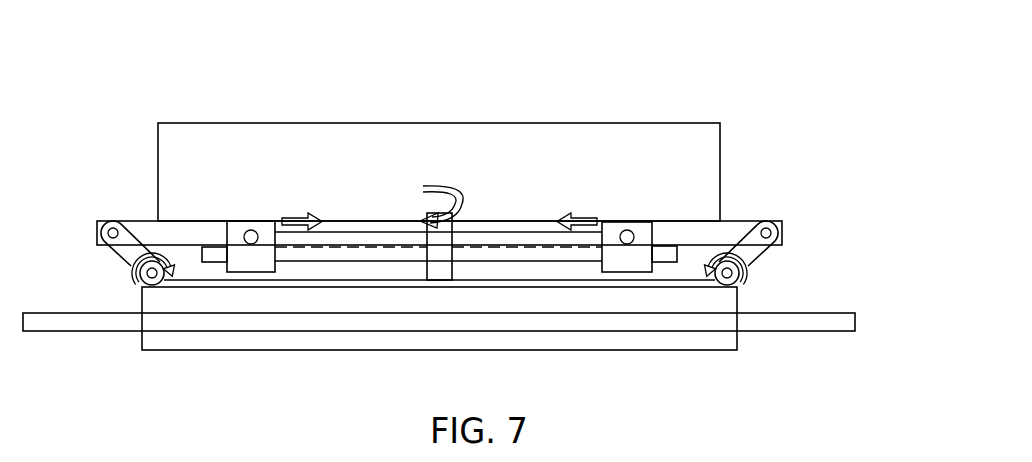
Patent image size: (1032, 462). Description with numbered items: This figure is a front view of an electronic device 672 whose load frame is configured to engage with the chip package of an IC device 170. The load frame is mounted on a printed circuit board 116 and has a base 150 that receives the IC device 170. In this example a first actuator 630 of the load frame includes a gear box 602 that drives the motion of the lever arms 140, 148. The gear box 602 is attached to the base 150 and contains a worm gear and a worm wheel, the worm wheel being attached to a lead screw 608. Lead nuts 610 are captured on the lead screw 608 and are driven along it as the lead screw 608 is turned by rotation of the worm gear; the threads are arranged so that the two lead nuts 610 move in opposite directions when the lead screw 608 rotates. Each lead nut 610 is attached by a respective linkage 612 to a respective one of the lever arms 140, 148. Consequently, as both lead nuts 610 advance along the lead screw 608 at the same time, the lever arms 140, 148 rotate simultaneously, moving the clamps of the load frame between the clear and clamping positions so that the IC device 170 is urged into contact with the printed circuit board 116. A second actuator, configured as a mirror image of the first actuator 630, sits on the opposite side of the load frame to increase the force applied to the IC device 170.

The electronic device 672 is at (822, 118).
The IC device 170 is at (537, 167).
The linkage 612 is at (183, 221).
The lead screw 608 is at (522, 247).
The lead nut 610 is at (250, 221).
The gear box 602 is at (408, 214).
The first actuator 630 is at (444, 172).
The lever arm 148 is at (133, 276).
The lever arm 140 is at (752, 262).
The base 150 is at (142, 297).
The printed circuit board 116 is at (840, 313).